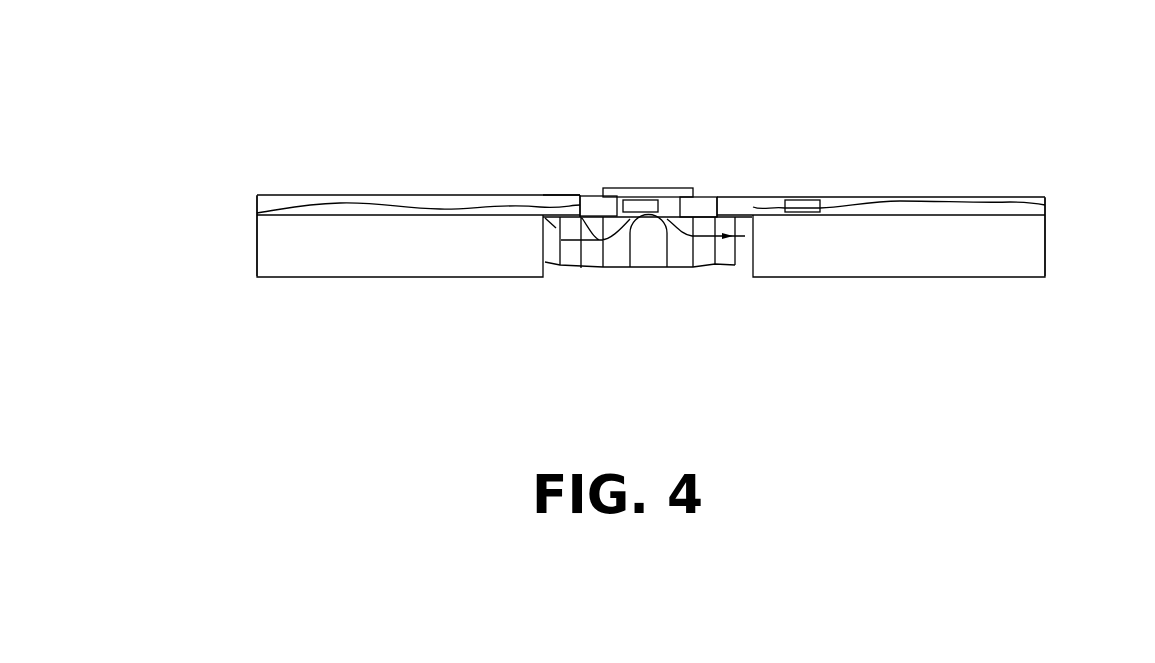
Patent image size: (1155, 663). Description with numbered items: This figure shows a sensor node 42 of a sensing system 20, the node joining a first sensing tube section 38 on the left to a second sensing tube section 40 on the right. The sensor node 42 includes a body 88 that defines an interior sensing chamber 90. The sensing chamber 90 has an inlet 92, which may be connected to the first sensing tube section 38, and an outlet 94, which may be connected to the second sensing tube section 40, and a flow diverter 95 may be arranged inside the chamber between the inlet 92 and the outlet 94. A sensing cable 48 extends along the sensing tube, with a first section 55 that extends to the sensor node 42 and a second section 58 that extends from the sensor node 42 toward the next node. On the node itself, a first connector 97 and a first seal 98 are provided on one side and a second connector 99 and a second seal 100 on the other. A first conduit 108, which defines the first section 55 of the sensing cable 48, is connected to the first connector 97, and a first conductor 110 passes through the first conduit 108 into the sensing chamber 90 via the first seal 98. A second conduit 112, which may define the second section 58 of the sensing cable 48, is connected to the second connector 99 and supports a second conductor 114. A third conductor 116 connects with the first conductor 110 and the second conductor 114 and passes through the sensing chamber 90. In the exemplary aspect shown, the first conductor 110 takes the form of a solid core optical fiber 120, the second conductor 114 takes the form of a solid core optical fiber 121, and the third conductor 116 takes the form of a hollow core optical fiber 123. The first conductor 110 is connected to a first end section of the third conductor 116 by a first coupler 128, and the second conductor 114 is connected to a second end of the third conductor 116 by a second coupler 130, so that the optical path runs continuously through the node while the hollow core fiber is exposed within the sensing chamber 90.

The assembly 20 is at (273, 127).
The first sensing tube section 38 is at (282, 277).
The second sensing tube section 40 is at (1018, 262).
The sensor node 42 is at (718, 307).
The sensing cable 48 is at (257, 192).
The first section 55 is at (422, 195).
The second section 58 is at (1027, 197).
The body 88 is at (682, 270).
The sensing chamber 90 is at (615, 257).
The inlet 92 is at (530, 195).
The outlet 94 is at (748, 245).
The flow diverter 95 is at (643, 248).
The first connector 97 is at (590, 193).
The first seal 98 is at (583, 196).
The second connector 99 is at (716, 195).
The second seal 100 is at (680, 196).
The first conduit 108 is at (332, 199).
The first conductor 110 is at (383, 212).
The second conduit 112 is at (872, 197).
The second conductor 114 is at (915, 200).
The third conductor 116 is at (735, 197).
The solid core optical fiber 120 is at (476, 218).
The solid core optical fiber 121 is at (1045, 213).
The hollow core optical fiber 123 is at (757, 212).
The first coupler 128 is at (630, 199).
The second coupler 130 is at (800, 200).